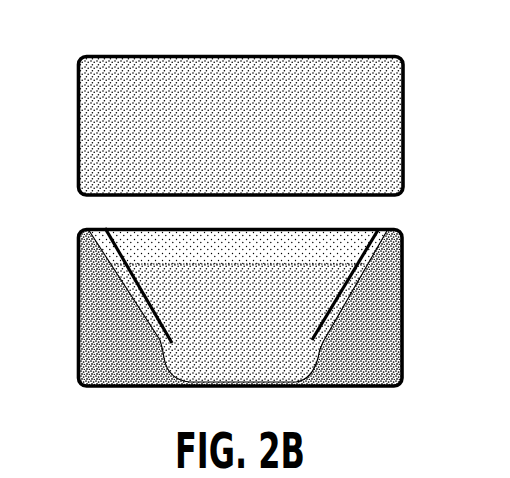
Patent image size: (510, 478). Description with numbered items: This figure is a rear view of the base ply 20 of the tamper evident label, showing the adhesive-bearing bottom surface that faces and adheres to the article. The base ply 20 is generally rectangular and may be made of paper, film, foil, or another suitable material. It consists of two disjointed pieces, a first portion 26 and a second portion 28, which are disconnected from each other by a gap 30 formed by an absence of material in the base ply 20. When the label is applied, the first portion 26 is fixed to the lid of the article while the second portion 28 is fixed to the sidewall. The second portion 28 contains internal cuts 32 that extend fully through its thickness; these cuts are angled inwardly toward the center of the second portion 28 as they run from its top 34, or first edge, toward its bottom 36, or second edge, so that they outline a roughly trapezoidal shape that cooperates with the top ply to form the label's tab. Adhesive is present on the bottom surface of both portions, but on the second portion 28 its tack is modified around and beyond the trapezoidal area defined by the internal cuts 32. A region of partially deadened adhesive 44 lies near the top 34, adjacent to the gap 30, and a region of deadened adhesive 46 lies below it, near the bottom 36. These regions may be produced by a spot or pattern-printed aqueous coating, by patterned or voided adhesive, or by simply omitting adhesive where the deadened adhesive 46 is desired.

The base ply 20 is at (216, 105).
The first portion 26 is at (216, 126).
The gap 30 is at (229, 302).
The second portion 28 is at (229, 305).
The partially deadened adhesive 44 is at (108, 249).
The internal cuts 32 is at (152, 307).
The top 34 is at (383, 228).
The bottom 36 is at (381, 387).
The deadened adhesive 46 is at (164, 356).